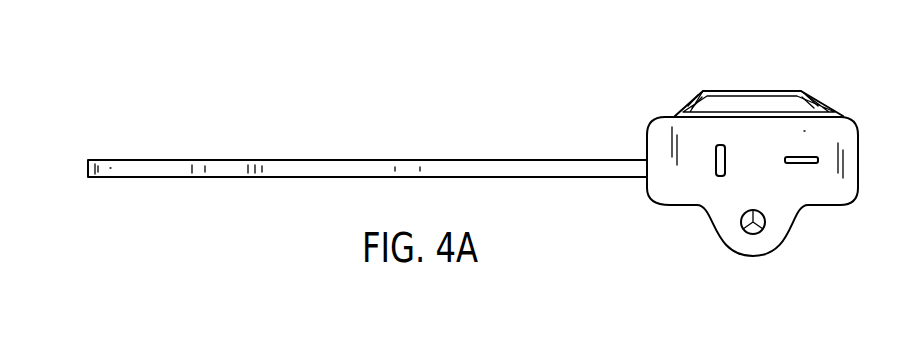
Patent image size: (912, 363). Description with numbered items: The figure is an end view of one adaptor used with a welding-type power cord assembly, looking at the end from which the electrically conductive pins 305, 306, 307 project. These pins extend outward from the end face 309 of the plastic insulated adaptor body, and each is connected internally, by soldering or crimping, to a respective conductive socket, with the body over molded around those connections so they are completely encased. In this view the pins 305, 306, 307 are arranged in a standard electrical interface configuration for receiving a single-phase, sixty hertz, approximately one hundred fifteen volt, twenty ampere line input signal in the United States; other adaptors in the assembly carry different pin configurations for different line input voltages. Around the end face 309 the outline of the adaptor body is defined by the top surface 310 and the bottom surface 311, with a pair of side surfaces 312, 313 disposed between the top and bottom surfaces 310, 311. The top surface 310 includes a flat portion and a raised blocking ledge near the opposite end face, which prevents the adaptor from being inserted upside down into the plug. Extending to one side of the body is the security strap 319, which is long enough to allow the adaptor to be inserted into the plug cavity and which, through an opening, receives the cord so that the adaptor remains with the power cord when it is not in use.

The conductive pin 305 is at (712, 167).
The conductive pin 306 is at (800, 157).
The conductive pin 307 is at (762, 232).
The end face 309 is at (821, 190).
The top surface 310 is at (748, 116).
The bottom surface 311 is at (738, 256).
The side surface 312 is at (645, 152).
The side surface 313 is at (865, 145).
The security strap 319 is at (389, 160).